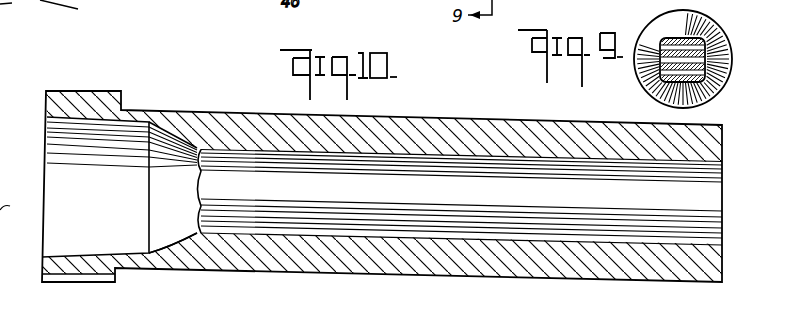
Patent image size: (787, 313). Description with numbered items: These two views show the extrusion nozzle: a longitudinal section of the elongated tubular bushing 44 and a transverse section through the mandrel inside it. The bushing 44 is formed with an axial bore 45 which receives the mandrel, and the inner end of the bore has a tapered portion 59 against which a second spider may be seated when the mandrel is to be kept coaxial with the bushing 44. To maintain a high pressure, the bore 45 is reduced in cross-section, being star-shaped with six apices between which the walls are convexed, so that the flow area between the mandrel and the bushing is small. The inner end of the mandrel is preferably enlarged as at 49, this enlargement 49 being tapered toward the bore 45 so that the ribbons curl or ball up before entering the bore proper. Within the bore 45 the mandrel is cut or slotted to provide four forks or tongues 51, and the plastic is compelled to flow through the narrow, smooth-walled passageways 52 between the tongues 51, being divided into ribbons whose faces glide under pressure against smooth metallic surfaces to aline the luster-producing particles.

In FIG. 10, the elongated tubular bushing 44 is at (485, 119).
In FIG. 10, the axial bore 45 is at (698, 193).
In FIG. 10, the tapered portion of the bore 59 is at (163, 247).
In FIG. 9, the enlargement of the mandrel 49 is at (716, 34).
In FIG. 9, the forks or tongues 51 is at (705, 52).
In FIG. 9, the passageways 52 is at (705, 69).